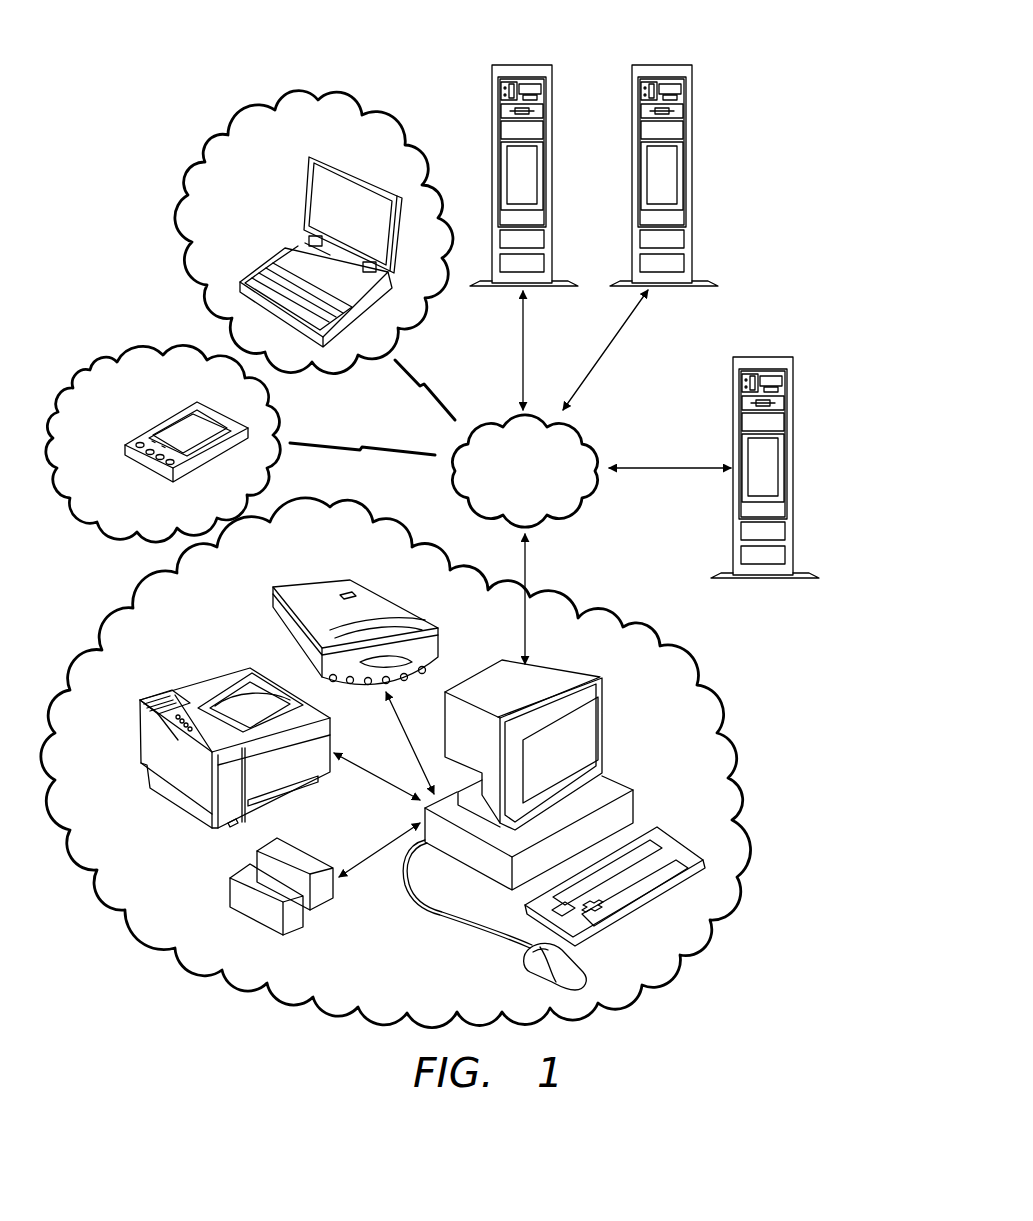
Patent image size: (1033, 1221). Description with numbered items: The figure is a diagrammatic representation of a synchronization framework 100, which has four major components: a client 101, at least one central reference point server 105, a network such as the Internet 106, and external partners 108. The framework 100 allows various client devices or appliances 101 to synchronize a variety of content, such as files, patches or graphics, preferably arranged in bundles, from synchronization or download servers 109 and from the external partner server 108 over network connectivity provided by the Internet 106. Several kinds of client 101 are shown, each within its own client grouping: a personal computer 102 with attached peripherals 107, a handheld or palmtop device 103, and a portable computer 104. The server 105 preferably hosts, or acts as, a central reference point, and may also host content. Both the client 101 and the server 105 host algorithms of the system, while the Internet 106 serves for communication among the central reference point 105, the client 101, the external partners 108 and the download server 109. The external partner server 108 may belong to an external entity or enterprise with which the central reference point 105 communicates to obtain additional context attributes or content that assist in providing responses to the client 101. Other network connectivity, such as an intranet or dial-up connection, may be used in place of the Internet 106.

The synchronization framework 100 is at (134, 148).
The client 101 is at (297, 97).
The personal computer 102 is at (610, 727).
The handheld/palmtop device 103 is at (147, 469).
The portable computer 104 is at (275, 262).
The central reference point server 105 is at (793, 412).
The Internet 106 is at (590, 512).
The peripherals 107 is at (300, 580).
The external partner server 108 is at (492, 120).
The download server 109 is at (692, 120).